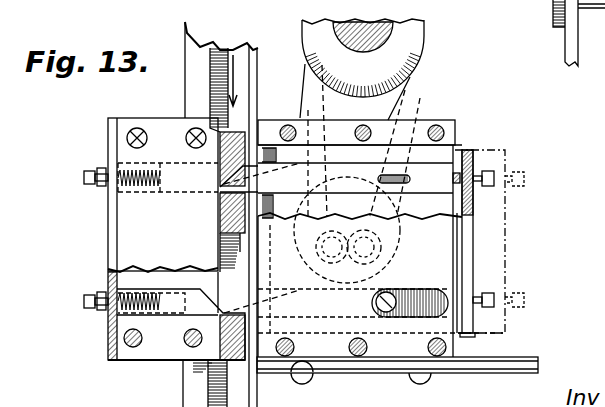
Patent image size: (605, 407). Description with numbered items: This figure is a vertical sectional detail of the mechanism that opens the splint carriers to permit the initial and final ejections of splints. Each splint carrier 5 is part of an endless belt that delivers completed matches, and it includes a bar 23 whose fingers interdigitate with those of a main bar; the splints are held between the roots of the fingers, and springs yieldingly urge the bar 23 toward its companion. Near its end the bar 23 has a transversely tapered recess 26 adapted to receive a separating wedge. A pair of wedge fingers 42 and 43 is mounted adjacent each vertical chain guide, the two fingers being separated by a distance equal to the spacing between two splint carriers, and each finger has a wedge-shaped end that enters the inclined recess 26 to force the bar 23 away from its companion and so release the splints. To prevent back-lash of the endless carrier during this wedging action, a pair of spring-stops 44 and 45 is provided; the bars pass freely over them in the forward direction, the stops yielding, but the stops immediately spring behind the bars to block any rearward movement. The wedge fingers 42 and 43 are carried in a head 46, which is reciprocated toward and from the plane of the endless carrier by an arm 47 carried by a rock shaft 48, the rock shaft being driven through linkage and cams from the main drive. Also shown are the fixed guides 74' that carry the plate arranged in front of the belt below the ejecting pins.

The splint carrier 5 is at (253, 147).
The bar 23 is at (231, 137).
The transversely tapered recess 26 is at (221, 167).
The wedge finger 42 is at (370, 179).
The wedge finger 43 is at (418, 308).
The spring-stop 44 is at (197, 183).
The spring-stop 45 is at (197, 308).
The head 46 is at (443, 206).
The arm 47 is at (377, 112).
The rock shaft 48 is at (377, 40).
The fixed guides 74' is at (421, 357).